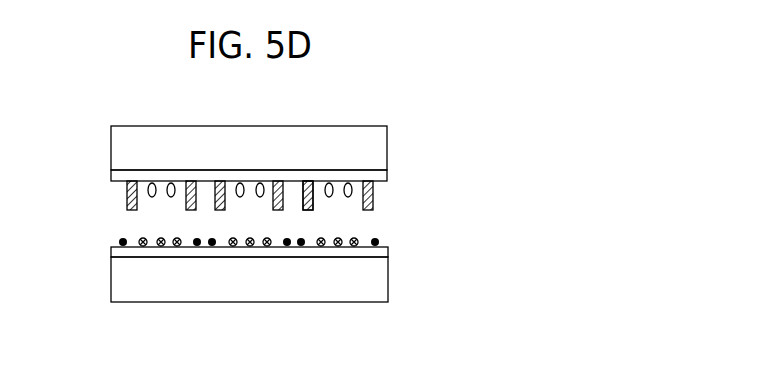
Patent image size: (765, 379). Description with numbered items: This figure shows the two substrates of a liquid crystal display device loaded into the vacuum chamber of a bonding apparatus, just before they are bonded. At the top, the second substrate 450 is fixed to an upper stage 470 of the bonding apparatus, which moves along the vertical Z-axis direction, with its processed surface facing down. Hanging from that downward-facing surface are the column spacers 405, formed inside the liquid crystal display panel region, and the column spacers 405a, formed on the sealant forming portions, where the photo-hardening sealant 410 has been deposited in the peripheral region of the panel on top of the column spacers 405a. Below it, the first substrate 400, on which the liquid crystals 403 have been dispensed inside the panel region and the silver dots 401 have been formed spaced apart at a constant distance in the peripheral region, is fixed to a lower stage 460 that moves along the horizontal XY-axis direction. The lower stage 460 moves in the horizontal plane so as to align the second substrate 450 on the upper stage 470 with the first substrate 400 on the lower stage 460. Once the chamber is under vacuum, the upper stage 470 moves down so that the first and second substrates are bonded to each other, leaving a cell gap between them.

The upper stage 470 is at (387, 148).
The second substrate 450 is at (387, 175).
The photo-hardening sealant 410 is at (127, 204).
The column spacer 405 is at (348, 183).
The column spacer 405a is at (308, 184).
The first substrate 400 is at (388, 252).
The lower stage 460 is at (388, 283).
The silver dots 401 is at (121, 240).
The liquid crystals 403 is at (145, 246).